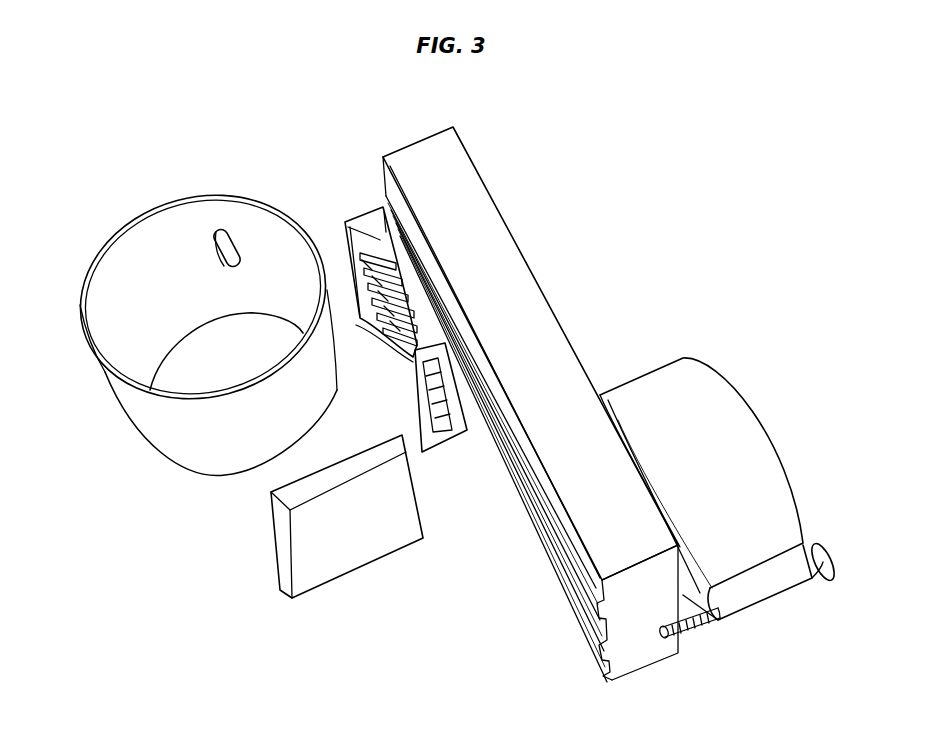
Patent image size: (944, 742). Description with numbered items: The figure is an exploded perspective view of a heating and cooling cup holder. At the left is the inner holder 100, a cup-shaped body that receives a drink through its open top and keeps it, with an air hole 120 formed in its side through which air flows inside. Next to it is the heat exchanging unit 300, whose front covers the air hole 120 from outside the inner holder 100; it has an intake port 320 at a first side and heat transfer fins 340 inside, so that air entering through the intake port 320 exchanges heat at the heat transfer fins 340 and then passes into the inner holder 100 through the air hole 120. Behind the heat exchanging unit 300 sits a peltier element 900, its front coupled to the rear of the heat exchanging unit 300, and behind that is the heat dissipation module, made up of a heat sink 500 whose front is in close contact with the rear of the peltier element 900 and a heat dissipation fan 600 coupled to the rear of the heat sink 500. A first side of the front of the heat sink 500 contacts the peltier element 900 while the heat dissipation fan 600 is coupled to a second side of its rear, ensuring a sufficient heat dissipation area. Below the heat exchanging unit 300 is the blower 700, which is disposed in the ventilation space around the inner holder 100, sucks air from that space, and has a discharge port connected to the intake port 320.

The inner holder 100 is at (142, 242).
The air hole 120 is at (213, 233).
The heat exchanging unit 300 is at (427, 320).
The intake port 320 is at (443, 423).
The heat transfer fins 340 is at (373, 258).
The heat sink 500 is at (508, 260).
The heat dissipation fan 600 is at (725, 398).
The blower 700 is at (368, 547).
The peltier element 900 is at (405, 243).